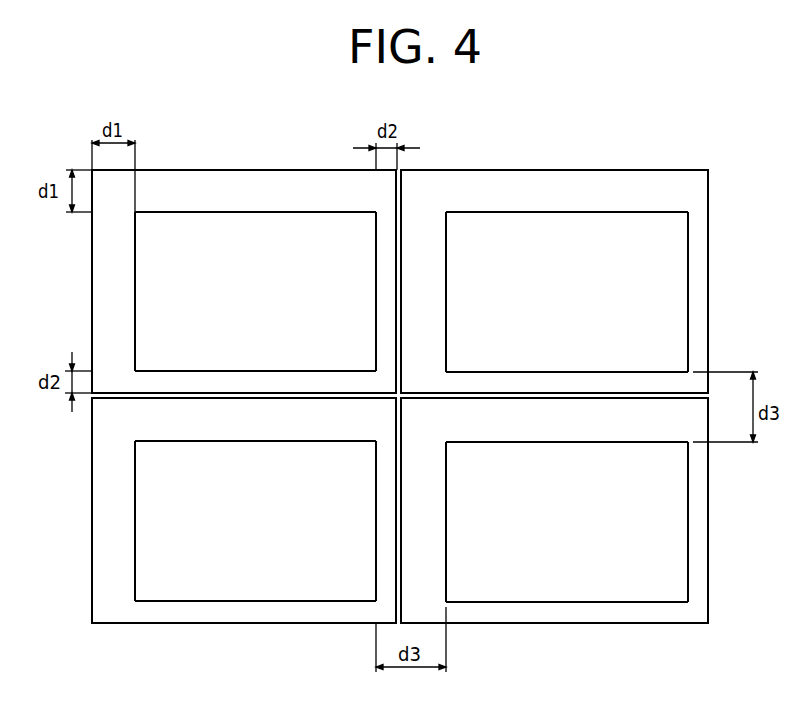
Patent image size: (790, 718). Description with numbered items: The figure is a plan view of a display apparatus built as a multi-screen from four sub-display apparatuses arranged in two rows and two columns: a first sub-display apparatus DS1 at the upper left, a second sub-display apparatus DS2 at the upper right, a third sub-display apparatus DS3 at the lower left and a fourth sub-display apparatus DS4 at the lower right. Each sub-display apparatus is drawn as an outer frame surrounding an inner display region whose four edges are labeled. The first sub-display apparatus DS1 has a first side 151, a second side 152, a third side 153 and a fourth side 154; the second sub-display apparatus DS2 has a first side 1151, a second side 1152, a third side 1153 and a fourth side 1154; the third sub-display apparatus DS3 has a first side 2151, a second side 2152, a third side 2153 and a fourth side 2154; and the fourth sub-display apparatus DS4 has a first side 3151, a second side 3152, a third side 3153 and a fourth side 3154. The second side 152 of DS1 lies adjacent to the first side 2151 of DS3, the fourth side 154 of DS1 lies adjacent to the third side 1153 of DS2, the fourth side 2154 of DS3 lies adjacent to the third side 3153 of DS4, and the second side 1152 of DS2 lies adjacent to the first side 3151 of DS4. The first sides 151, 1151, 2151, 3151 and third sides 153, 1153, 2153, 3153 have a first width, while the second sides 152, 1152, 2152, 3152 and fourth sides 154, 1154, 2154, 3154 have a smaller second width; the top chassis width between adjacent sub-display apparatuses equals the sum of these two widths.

The first sub-display apparatus DS1 is at (240, 170).
The second sub-display apparatus DS2 is at (575, 170).
The third sub-display apparatus DS3 is at (240, 623).
The fourth sub-display apparatus DS4 is at (573, 623).
The first side 151 is at (252, 195).
The second side 152 is at (252, 389).
The third side 153 is at (122, 290).
The fourth side 154 is at (393, 290).
The first side 1151 is at (562, 197).
The second side 1152 is at (563, 390).
The third side 1153 is at (430, 290).
The fourth side 1154 is at (703, 290).
The first side 2151 is at (252, 425).
The second side 2152 is at (252, 618).
The third side 2153 is at (122, 520).
The fourth side 2154 is at (393, 520).
The first side 3151 is at (563, 425).
The second side 3152 is at (563, 619).
The third side 3153 is at (430, 520).
The fourth side 3154 is at (703, 520).